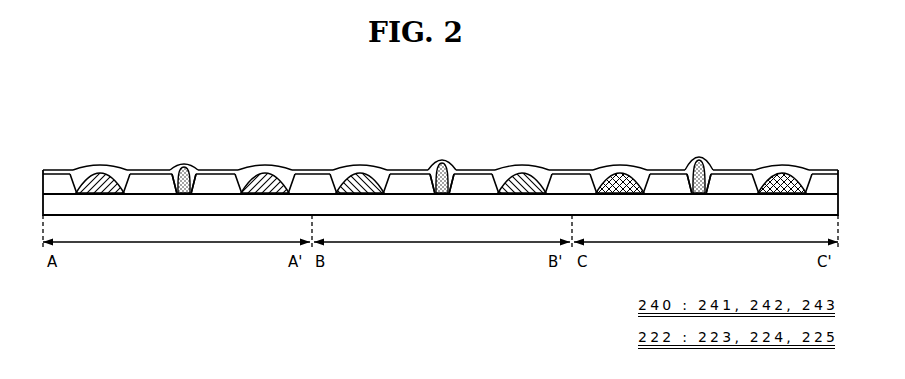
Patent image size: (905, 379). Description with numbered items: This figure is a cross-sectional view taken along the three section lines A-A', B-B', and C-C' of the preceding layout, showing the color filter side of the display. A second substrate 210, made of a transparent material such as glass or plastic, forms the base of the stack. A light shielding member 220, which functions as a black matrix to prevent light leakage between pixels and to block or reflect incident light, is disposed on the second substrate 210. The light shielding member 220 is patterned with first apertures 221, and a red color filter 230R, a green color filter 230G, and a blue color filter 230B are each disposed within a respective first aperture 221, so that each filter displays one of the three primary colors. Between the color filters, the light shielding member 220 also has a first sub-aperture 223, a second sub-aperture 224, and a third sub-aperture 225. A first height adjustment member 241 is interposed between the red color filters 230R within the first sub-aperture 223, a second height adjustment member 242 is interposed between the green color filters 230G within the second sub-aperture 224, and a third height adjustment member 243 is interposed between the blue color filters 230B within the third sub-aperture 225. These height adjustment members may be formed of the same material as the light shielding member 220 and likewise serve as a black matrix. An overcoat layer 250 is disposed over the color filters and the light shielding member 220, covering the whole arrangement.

The second substrate 210 is at (50, 206).
The light shielding member 220 is at (148, 184).
The first aperture 221 is at (122, 172).
The first sub-aperture 223 is at (193, 173).
The second sub-aperture 224 is at (452, 173).
The third sub-aperture 225 is at (710, 173).
The red color filter 230R is at (97, 177).
The green color filter 230G is at (357, 177).
The blue color filter 230B is at (617, 177).
The first height adjustment member 241 is at (181, 165).
The second height adjustment member 242 is at (442, 160).
The third height adjustment member 243 is at (699, 157).
The overcoat layer 250 is at (262, 169).